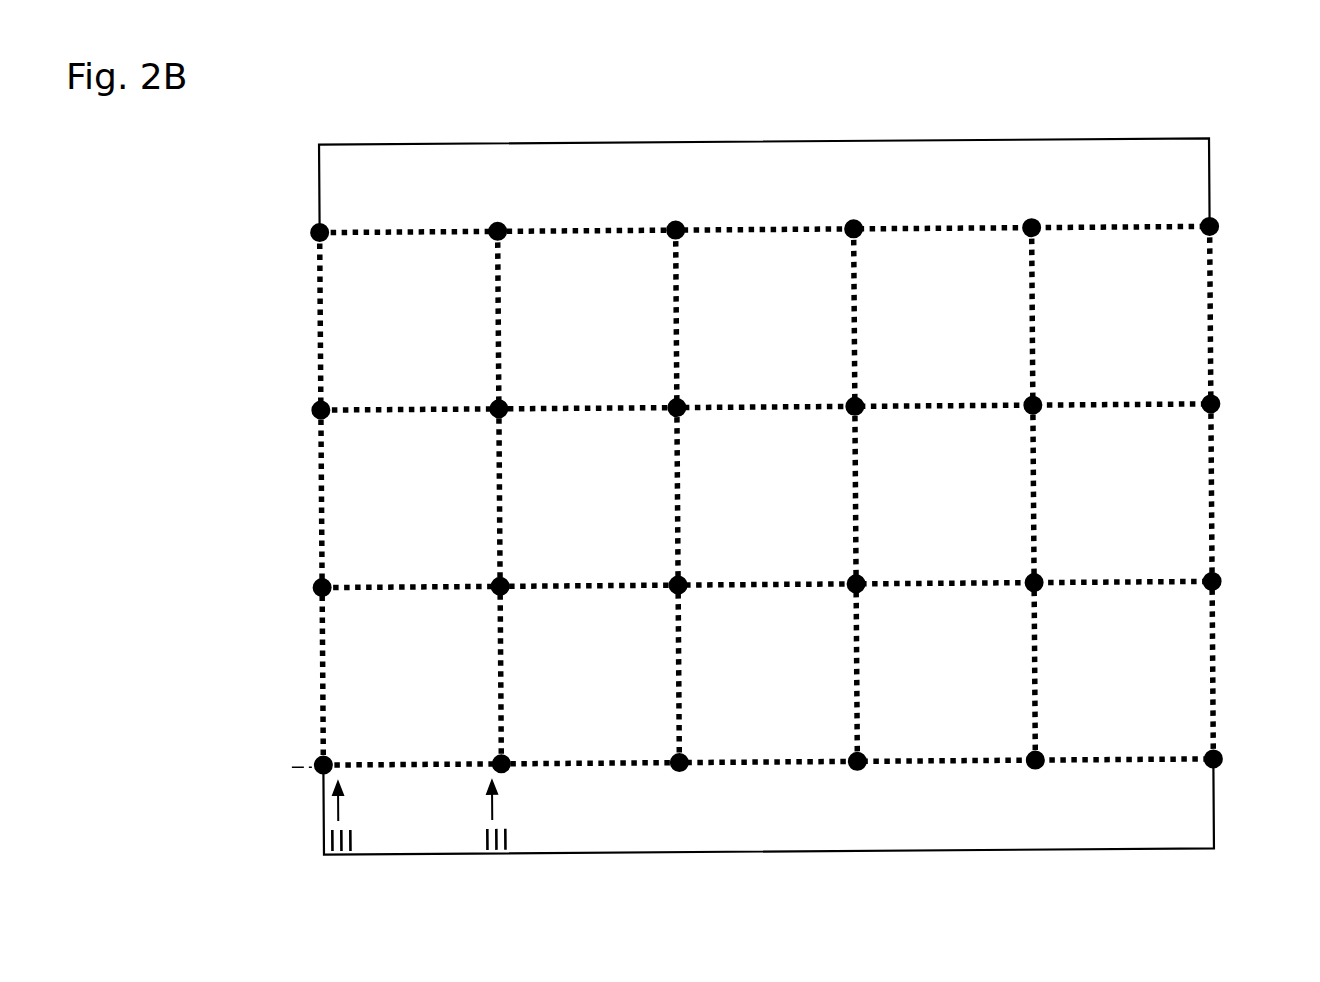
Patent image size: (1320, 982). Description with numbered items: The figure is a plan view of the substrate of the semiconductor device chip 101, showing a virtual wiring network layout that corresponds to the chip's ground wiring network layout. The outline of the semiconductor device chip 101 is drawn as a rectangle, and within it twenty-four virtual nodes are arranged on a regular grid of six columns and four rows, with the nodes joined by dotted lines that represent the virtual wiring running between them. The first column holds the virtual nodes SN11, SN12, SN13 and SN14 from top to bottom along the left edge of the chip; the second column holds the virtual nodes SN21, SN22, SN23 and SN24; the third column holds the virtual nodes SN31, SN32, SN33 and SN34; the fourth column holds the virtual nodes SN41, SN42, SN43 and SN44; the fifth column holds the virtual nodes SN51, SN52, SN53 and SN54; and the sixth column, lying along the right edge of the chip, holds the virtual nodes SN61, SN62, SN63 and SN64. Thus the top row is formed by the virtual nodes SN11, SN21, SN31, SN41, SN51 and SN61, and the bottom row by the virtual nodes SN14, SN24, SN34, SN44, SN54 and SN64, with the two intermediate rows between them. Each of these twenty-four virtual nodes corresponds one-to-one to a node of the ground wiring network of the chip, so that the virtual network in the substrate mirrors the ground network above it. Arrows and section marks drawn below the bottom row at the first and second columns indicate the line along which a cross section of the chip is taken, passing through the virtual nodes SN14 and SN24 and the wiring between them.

The semiconductor device chip 101 is at (1212, 142).
The virtual node SN11 is at (360, 252).
The virtual node SN21 is at (538, 251).
The virtual node SN31 is at (716, 250).
The virtual node SN41 is at (893, 248).
The virtual node SN51 is at (1071, 247).
The virtual node SN61 is at (1249, 246).
The virtual node SN12 is at (361, 429).
The virtual node SN22 is at (539, 428).
The virtual node SN32 is at (717, 426).
The virtual node SN42 is at (894, 424).
The virtual node SN52 is at (1072, 423).
The virtual node SN62 is at (1250, 423).
The virtual node SN13 is at (363, 607).
The virtual node SN23 is at (541, 606).
The virtual node SN33 is at (719, 605).
The virtual node SN43 is at (896, 603).
The virtual node SN53 is at (1074, 601).
The virtual node SN63 is at (1252, 601).
The virtual node SN14 is at (364, 749).
The virtual node SN24 is at (542, 748).
The virtual node SN34 is at (718, 780).
The virtual node SN44 is at (896, 779).
The virtual node SN54 is at (1074, 778).
The virtual node SN64 is at (1253, 776).